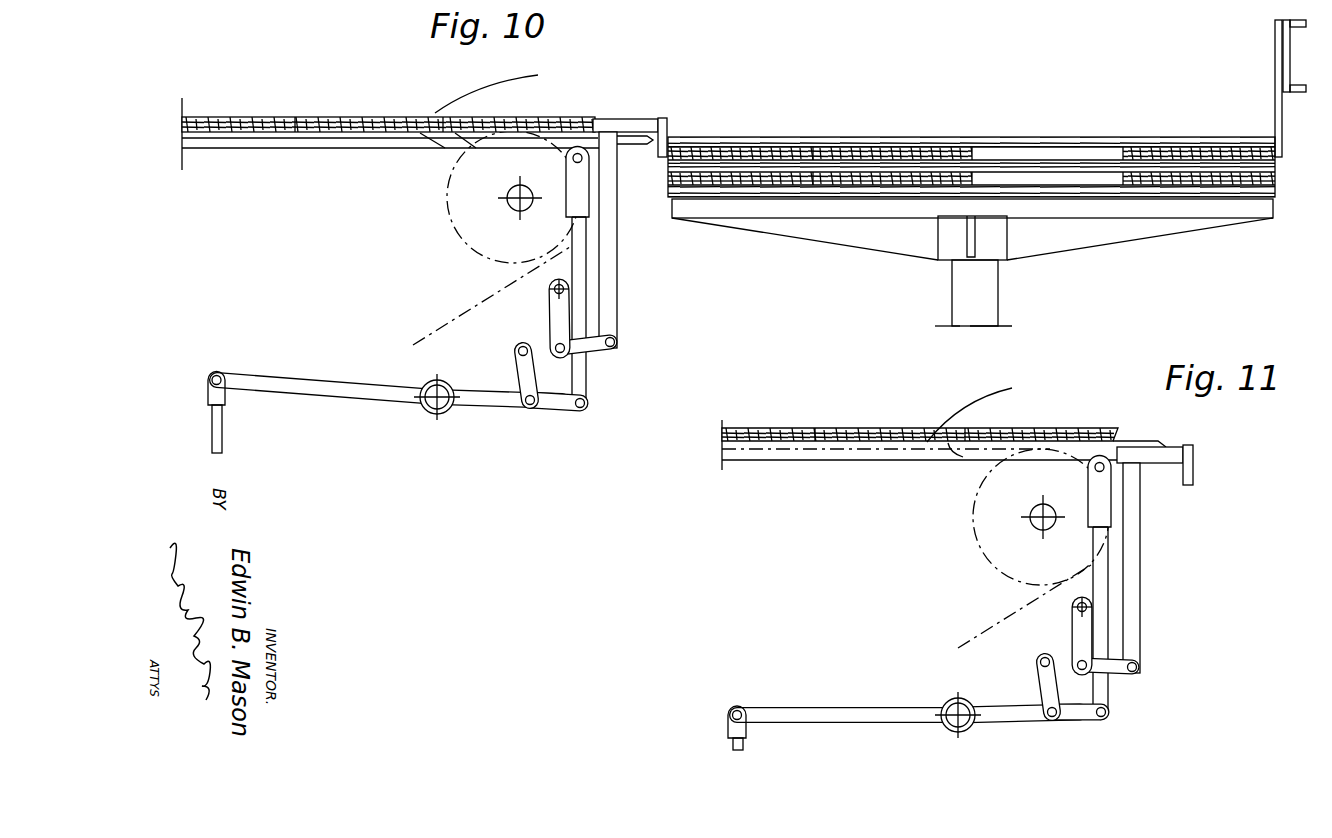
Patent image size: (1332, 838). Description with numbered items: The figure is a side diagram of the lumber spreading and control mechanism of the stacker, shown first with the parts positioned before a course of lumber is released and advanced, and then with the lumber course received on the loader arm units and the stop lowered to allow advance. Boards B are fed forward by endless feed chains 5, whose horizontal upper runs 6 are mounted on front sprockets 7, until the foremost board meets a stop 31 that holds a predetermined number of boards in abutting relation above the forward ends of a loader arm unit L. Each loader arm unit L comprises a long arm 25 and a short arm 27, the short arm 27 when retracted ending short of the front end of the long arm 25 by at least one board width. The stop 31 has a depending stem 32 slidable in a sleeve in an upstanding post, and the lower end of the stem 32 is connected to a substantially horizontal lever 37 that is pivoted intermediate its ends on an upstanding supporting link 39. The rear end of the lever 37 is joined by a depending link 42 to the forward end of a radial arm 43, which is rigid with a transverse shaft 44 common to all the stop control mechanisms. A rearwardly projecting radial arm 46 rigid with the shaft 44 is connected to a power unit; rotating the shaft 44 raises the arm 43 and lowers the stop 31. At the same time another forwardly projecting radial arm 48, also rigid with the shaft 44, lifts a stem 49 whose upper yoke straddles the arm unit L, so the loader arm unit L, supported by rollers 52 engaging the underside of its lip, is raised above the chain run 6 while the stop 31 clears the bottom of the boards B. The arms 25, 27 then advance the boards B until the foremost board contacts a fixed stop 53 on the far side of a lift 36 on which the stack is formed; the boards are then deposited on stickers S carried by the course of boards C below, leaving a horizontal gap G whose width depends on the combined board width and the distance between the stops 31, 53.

In FIG. 10, the endless feed chains 5 is at (422, 335).
In FIG. 11, the endless feed chains 5 is at (1024, 606).
In FIG. 10, the upper runs 6 is at (387, 128).
In FIG. 11, the upper runs 6 is at (862, 446).
In FIG. 10, the front sprockets 7 is at (452, 210).
In FIG. 11, the front sprockets 7 is at (975, 500).
In FIG. 10, the long arm 25 is at (466, 143).
In FIG. 11, the long arm 25 is at (1078, 446).
In FIG. 10, the short arm 27 is at (282, 145).
In FIG. 11, the short arm 27 is at (917, 456).
In FIG. 10, the stop 31 is at (616, 123).
In FIG. 11, the stop 31 is at (1166, 455).
In FIG. 10, the depending stem 32 is at (617, 276).
In FIG. 11, the depending stem 32 is at (1133, 568).
In FIG. 10, the lift 36 is at (1210, 208).
In FIG. 10, the lever 37 is at (600, 345).
In FIG. 11, the lever 37 is at (1115, 665).
In FIG. 10, the supporting link 39 is at (550, 311).
In FIG. 11, the supporting link 39 is at (1080, 633).
In FIG. 10, the depending link 42 is at (518, 366).
In FIG. 11, the depending link 42 is at (1048, 688).
In FIG. 10, the radial arm 43 is at (482, 403).
In FIG. 11, the radial arm 43 is at (1005, 707).
In FIG. 10, the transverse shaft 44 is at (431, 403).
In FIG. 11, the transverse shaft 44 is at (955, 705).
In FIG. 10, the radial arm 46 is at (295, 385).
In FIG. 11, the radial arm 46 is at (790, 708).
In FIG. 10, the radial arm 48 is at (560, 408).
In FIG. 11, the radial arm 48 is at (1093, 710).
In FIG. 10, the stem 49 is at (580, 302).
In FIG. 11, the stem 49 is at (1105, 614).
In FIG. 10, the rollers 52 is at (566, 160).
In FIG. 11, the rollers 52 is at (1099, 492).
In FIG. 10, the stop 53 is at (1275, 87).
In FIG. 10, the board B is at (515, 120).
In FIG. 11, the board B is at (1003, 430).
In FIG. 10, the course of boards C is at (882, 148).
In FIG. 10, the horizontal gap G is at (998, 156).
In FIG. 10, the loader arm unit L is at (323, 150).
In FIG. 11, the loader arm unit L is at (793, 463).
In FIG. 10, the stickers S is at (1068, 138).